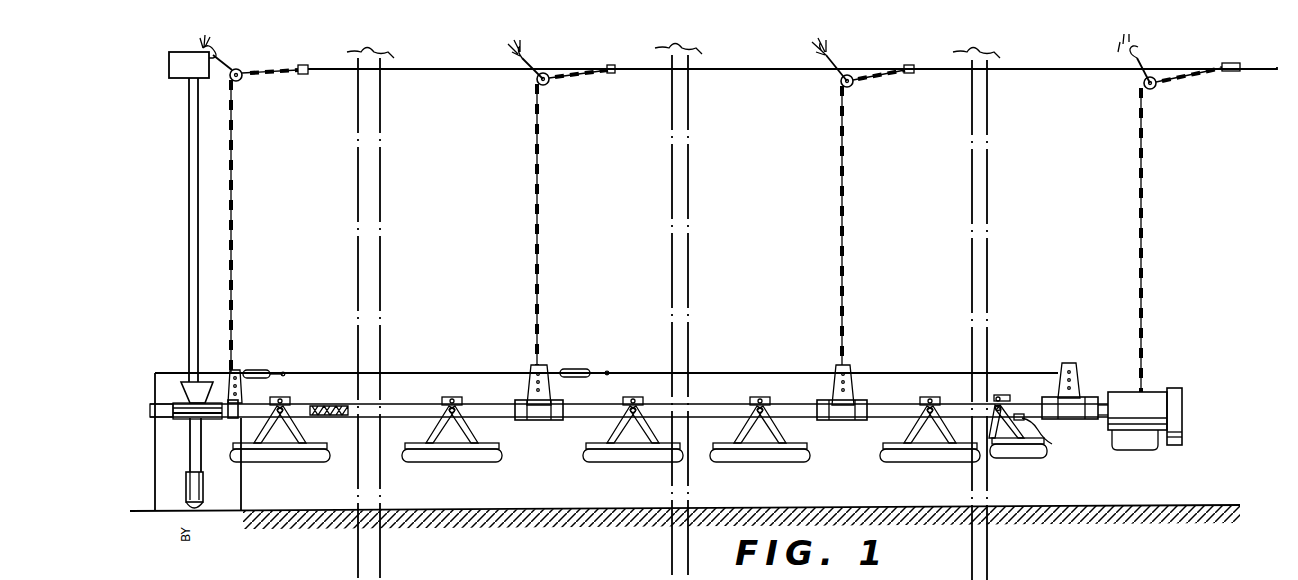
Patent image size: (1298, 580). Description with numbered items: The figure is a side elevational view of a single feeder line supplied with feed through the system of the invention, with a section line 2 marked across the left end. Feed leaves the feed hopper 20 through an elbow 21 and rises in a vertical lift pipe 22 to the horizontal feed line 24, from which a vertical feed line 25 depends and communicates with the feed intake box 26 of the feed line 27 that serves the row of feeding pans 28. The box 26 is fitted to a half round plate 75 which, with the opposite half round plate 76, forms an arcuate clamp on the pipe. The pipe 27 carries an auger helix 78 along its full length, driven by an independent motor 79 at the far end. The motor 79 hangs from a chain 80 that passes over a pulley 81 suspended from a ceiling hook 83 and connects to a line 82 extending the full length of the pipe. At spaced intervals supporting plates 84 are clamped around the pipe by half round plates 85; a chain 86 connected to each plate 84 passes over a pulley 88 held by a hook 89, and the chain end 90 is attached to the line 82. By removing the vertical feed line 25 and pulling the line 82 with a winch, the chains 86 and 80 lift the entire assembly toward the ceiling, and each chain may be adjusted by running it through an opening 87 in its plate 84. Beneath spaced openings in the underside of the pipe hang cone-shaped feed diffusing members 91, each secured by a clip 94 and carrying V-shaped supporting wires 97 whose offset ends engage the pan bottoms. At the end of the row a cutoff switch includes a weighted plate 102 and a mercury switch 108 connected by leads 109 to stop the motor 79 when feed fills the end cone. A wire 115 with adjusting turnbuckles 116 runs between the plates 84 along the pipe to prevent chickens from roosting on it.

The section line 2- 2 is at (310, 14).
The feed hopper 20 is at (244, 498).
The elbow 21 is at (203, 490).
The vertical lift pipe 22 is at (192, 454).
The horizontal feed line 24 is at (185, 62).
The vertical feed line 25 is at (188, 270).
The feed intake box 26 is at (182, 390).
The feed line 27 is at (608, 400).
The feeding pan 28 is at (476, 462).
The half round plate 75 is at (180, 418).
The half round plate 76 is at (228, 421).
The auger helix 78 is at (350, 406).
The motor 79 is at (1150, 400).
The chain 80 is at (1148, 282).
The pulley 81 is at (1158, 86).
The line 82 is at (735, 67).
The hook 83 is at (1136, 55).
The supporting plate 84 is at (552, 392).
The half round plate 85 is at (534, 420).
The chain 86 is at (239, 246).
The opening 87 is at (218, 372).
The pulley 88 is at (548, 72).
The hook 89 is at (830, 52).
The chain end 90 is at (613, 66).
The feed diffusing member 91 is at (290, 405).
The clip 94 is at (452, 396).
The V-shaped supporting wire 97 is at (458, 410).
The plate 102 is at (1000, 404).
The mercury switch 108 is at (1052, 444).
The leads 109 is at (1036, 404).
The wire 115 is at (765, 372).
The turnbuckle 116 is at (258, 370).